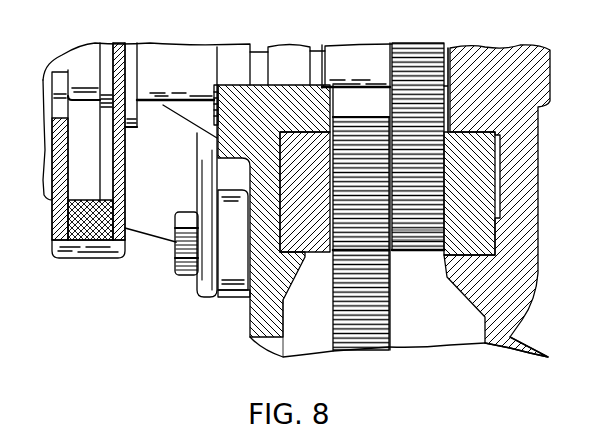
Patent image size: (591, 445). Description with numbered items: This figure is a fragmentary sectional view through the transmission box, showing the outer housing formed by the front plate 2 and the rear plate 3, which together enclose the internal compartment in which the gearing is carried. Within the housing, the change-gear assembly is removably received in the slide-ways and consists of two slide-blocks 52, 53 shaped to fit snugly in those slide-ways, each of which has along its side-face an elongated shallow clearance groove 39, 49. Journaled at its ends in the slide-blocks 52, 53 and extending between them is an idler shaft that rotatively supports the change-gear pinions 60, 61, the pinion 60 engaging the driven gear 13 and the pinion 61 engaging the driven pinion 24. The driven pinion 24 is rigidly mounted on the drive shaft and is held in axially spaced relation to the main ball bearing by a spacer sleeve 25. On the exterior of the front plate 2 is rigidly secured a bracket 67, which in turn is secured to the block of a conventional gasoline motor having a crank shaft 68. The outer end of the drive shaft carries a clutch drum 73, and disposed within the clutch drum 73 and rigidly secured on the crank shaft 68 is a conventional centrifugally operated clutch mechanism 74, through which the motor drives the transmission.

The crank shaft 68 is at (176, 44).
The centrifugally operated clutch mechanism 74 is at (54, 222).
The clutch drum 73 is at (62, 259).
The bracket 67 is at (167, 237).
The clearance groove 39 is at (274, 211).
The front plate 2 is at (252, 313).
The slide-block 53 is at (307, 255).
The spacer sleeve 25 is at (371, 45).
The change-gear pinion 61 is at (367, 117).
The driven gear 13 is at (389, 331).
The driven pinion 24 is at (418, 44).
The change-gear pinion 60 is at (429, 250).
The slide-block 52 is at (444, 256).
The clearance groove 49 is at (499, 173).
The rear plate 3 is at (530, 346).